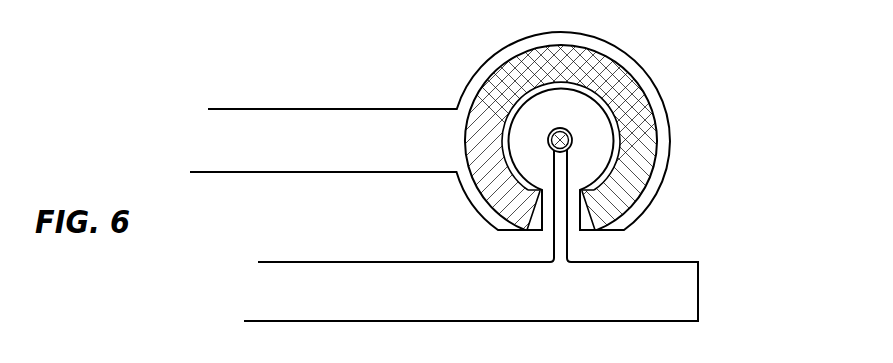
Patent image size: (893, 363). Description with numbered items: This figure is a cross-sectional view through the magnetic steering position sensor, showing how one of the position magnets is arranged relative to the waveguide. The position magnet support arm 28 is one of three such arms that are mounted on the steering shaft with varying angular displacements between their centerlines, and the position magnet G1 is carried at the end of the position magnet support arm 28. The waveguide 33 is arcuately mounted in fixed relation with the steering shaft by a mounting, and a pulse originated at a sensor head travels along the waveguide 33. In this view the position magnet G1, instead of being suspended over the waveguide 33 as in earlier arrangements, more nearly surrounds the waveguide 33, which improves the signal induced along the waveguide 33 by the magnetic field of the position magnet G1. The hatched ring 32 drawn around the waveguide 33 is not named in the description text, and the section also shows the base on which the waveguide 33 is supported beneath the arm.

The position magnet support arm 28 is at (345, 125).
The resilient bushing 32 is at (592, 117).
The waveguide 33 is at (573, 141).
The position magnet G1 is at (638, 167).